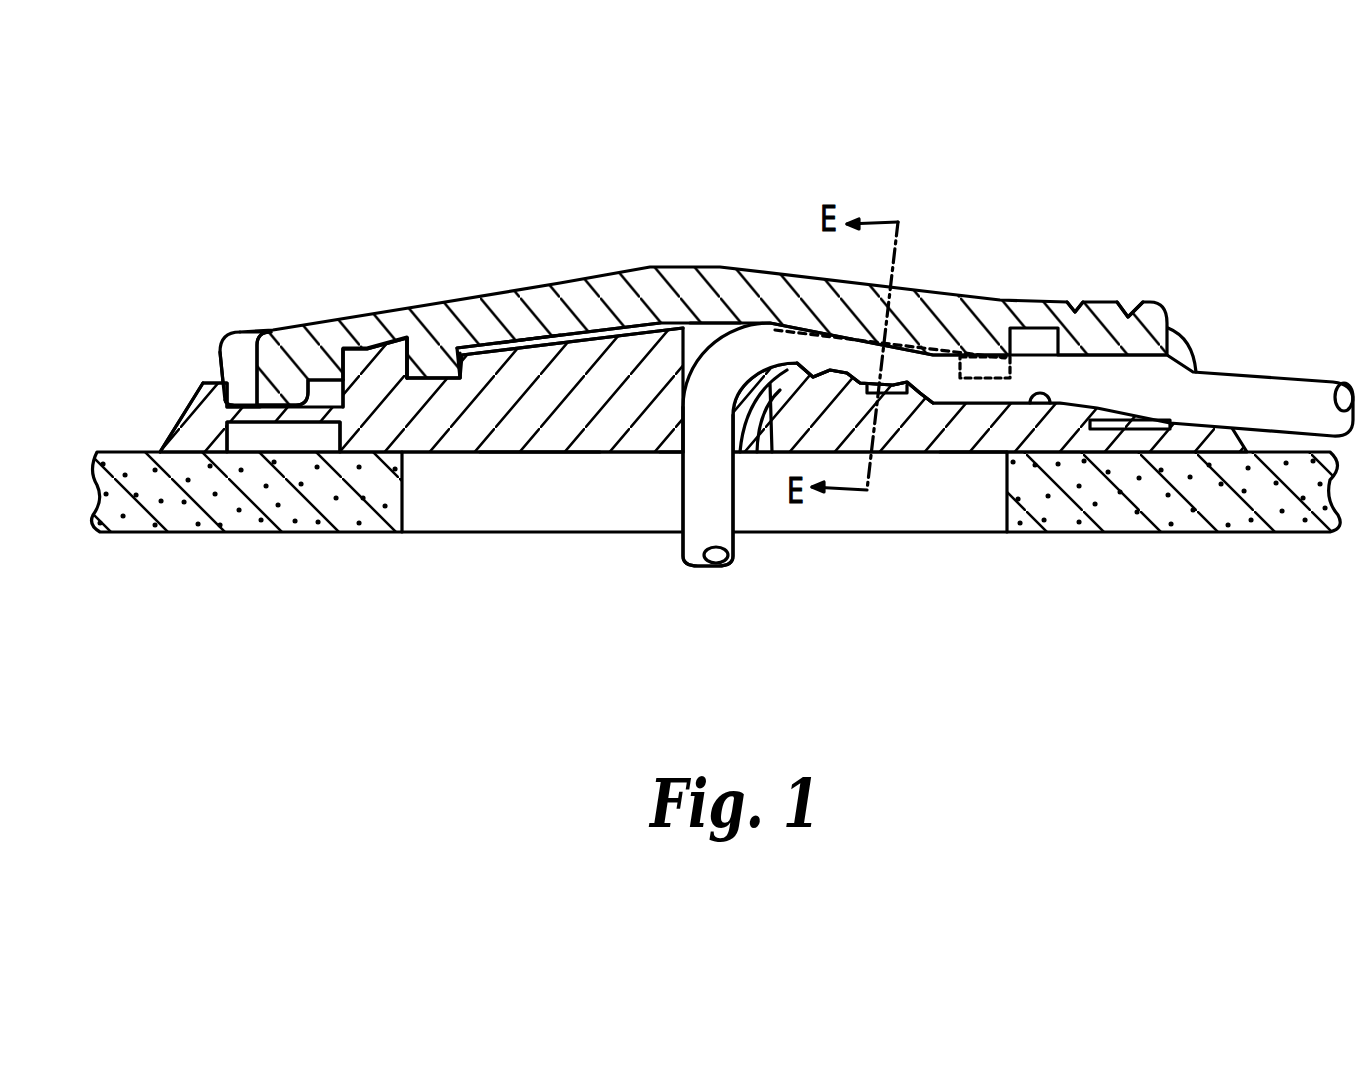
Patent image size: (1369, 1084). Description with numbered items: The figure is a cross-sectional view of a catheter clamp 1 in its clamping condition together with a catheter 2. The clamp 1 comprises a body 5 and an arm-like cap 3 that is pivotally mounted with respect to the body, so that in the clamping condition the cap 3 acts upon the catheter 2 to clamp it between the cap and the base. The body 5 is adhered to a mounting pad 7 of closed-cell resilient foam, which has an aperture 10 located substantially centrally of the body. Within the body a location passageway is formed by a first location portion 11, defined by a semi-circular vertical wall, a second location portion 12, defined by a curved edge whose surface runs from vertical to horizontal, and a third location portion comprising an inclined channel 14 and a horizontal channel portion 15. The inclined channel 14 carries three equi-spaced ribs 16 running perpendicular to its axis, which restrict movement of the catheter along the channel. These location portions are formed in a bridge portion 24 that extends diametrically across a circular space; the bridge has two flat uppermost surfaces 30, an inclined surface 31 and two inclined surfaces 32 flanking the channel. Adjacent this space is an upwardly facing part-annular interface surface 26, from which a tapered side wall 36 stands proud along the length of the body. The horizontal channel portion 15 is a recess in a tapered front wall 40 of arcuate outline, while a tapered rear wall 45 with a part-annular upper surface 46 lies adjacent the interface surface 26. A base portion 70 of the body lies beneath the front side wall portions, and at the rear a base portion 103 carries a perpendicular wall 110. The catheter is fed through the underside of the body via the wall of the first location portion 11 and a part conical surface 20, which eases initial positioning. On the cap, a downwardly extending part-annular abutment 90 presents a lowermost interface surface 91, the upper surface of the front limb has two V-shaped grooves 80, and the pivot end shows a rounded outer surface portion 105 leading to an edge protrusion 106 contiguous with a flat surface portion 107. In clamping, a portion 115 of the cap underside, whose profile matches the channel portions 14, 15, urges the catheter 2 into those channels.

The catheter clamp 1 is at (1080, 250).
The catheter 2 is at (1253, 395).
The cap 3 is at (625, 266).
The body 5 is at (980, 457).
The mounting pad 7 is at (1253, 497).
The aperture 10 is at (597, 508).
The first location portion 11 is at (678, 428).
The second location portion 12 is at (767, 432).
The inclined channel 14 is at (901, 385).
The horizontal channel portion 15 is at (1050, 407).
The ribs 16 is at (900, 397).
The part conical surface 20 is at (745, 440).
The bridge portion 24 is at (433, 417).
The interface surface 26 is at (437, 373).
The flat uppermost surfaces 30 is at (713, 325).
The inclined surface 31 is at (527, 335).
The inclined surfaces 32 is at (942, 343).
The tapered side wall 36 is at (240, 340).
The tapered front wall 40 is at (1067, 420).
The tapered rear wall 45 is at (313, 337).
The upper surface 46 is at (377, 343).
The base portion 70 is at (1142, 432).
The V-shaped grooves 80 is at (1133, 302).
The abutment 90 is at (427, 367).
The lowermost interface surface 91 is at (408, 385).
The base portion 103 is at (235, 425).
The rounded outer surface portion 105 is at (247, 422).
The edge protrusion 106 is at (230, 364).
The flat surface portion 107 is at (257, 400).
The wall 110 is at (207, 385).
The portion of the underside of the cap 115 is at (779, 430).